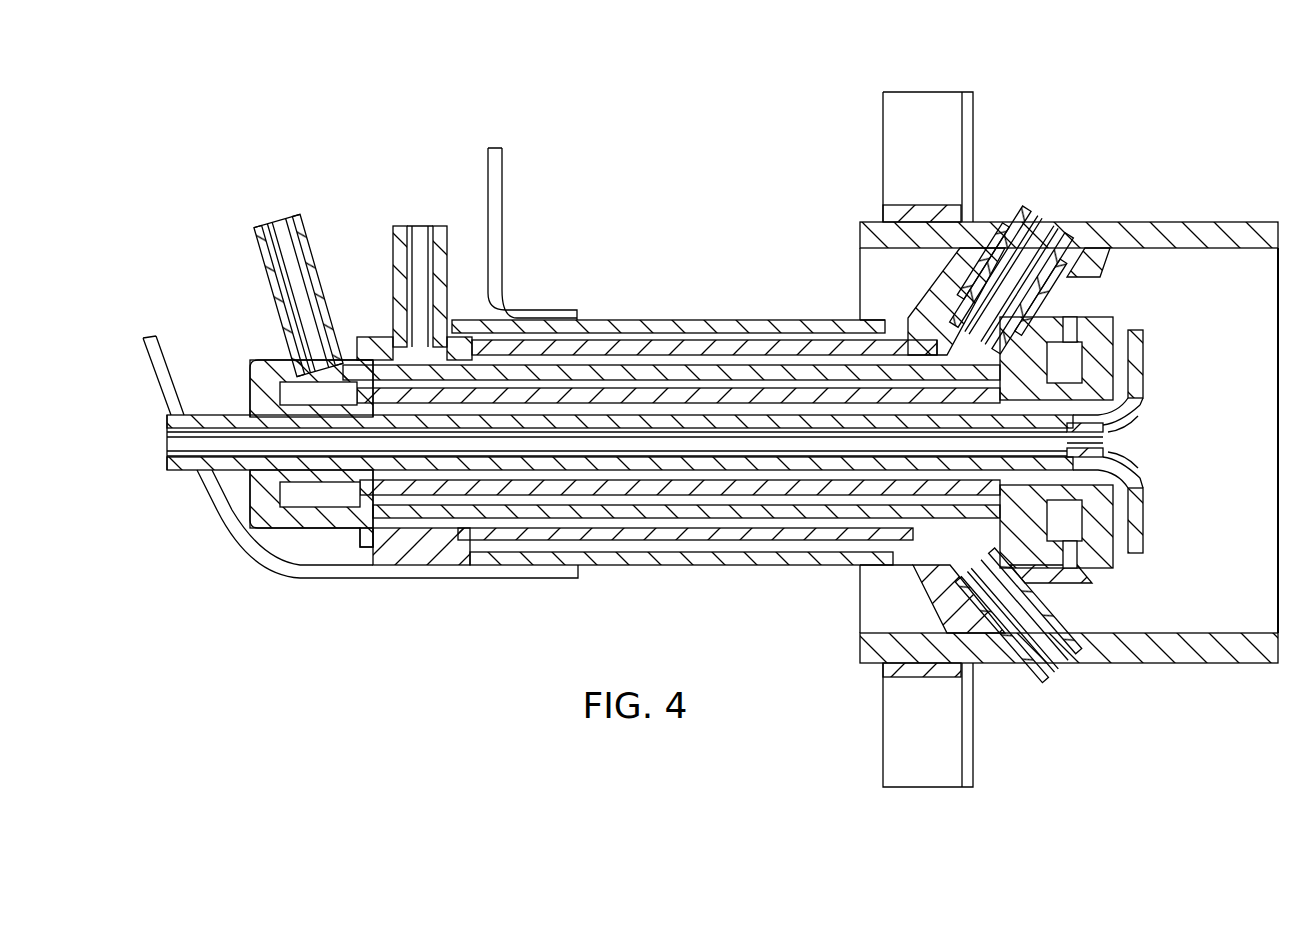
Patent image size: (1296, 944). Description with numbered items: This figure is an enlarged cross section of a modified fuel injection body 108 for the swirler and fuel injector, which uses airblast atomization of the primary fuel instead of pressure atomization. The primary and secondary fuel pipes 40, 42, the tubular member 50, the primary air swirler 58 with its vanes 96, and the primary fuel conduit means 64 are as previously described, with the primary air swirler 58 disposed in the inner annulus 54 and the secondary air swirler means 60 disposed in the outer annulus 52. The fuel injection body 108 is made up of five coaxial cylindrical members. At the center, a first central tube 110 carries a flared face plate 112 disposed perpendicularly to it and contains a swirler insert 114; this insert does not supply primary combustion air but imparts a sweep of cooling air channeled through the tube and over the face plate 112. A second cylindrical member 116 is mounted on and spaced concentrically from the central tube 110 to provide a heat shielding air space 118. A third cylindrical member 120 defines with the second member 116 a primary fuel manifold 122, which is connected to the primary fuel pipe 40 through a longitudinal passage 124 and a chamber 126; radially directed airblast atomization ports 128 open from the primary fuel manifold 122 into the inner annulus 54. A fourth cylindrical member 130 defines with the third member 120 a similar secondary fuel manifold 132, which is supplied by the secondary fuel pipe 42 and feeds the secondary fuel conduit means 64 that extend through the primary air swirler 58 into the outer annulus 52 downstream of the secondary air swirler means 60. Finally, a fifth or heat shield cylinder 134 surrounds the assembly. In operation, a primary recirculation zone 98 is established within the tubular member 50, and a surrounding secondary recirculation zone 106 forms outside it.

The primary fuel pipe 40 is at (263, 271).
The secondary fuel pipe 42 is at (393, 270).
The tubular member 50 is at (1126, 218).
The outer annulus 52 is at (1083, 62).
The inner annulus 54 is at (1069, 424).
The primary air swirler means 58 is at (926, 598).
The secondary air swirler means 60 is at (876, 147).
The conduit means 64 is at (1024, 280).
The vanes 96 is at (1100, 270).
The primary recirculation zone 98 is at (1220, 461).
The secondary recirculation zone 106 is at (1232, 143).
The fuel injection body 108 is at (663, 572).
The central tube 110 is at (520, 420).
The face plate 112 is at (1143, 372).
The swirler insert 114 is at (1097, 443).
The second cylindrical member 116 is at (551, 400).
The heat shielding air space 118 is at (574, 406).
The third cylindrical member 120 is at (641, 383).
The primary fuel manifold 122 is at (1070, 358).
The longitudinal passage 124 is at (620, 376).
The chamber 126 is at (295, 390).
The airblast atomization ports 128 is at (1070, 328).
The fourth cylindrical member 130 is at (717, 347).
The secondary fuel manifold 132 is at (950, 353).
The heat shield cylinder 134 is at (748, 320).